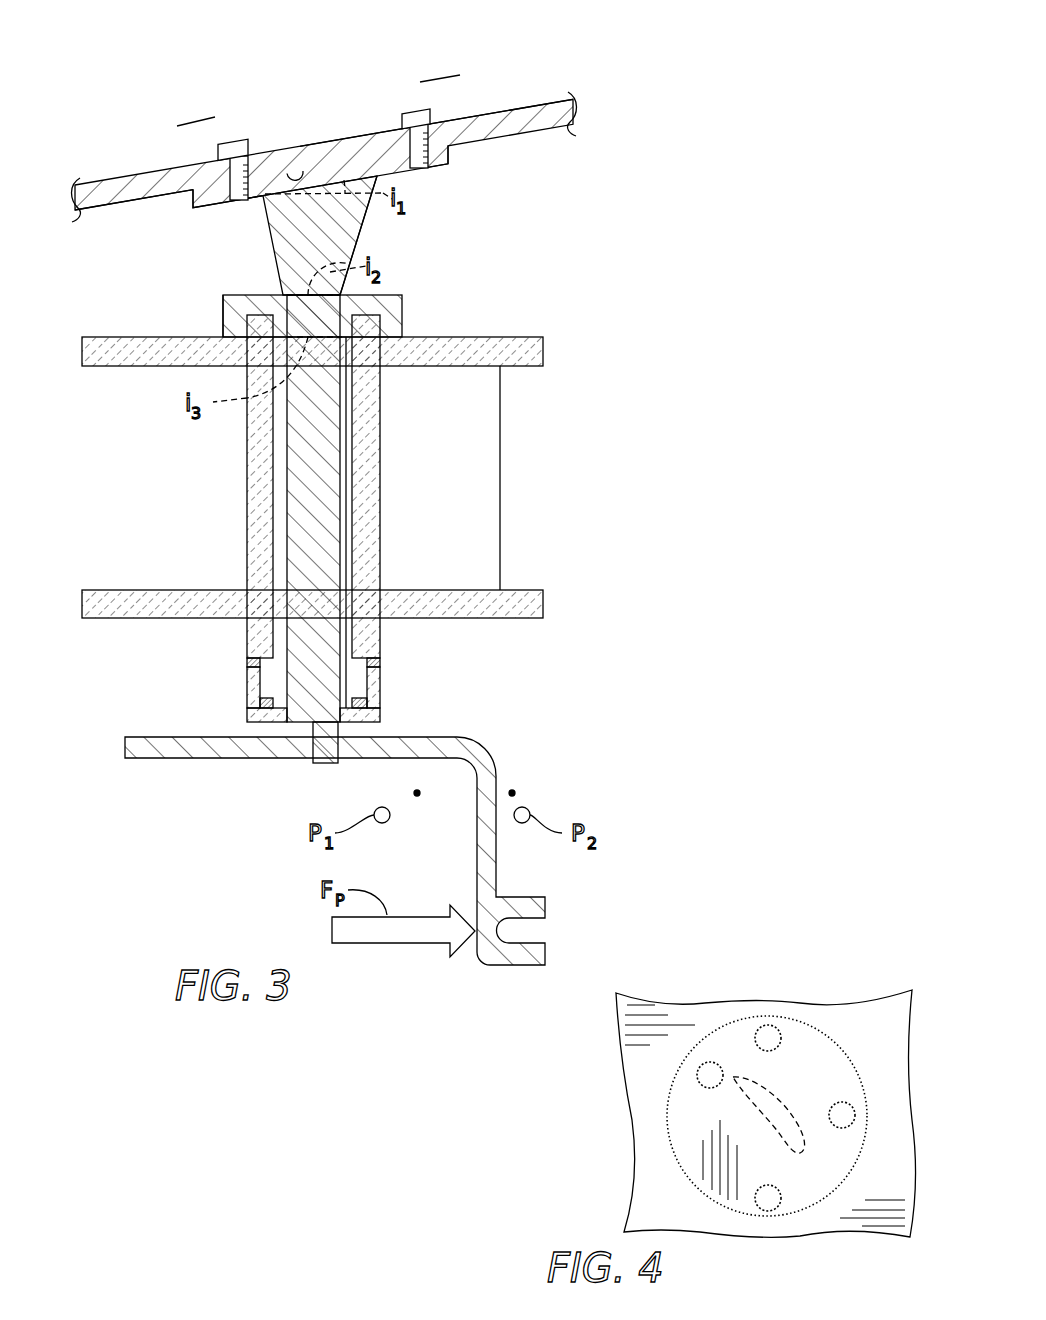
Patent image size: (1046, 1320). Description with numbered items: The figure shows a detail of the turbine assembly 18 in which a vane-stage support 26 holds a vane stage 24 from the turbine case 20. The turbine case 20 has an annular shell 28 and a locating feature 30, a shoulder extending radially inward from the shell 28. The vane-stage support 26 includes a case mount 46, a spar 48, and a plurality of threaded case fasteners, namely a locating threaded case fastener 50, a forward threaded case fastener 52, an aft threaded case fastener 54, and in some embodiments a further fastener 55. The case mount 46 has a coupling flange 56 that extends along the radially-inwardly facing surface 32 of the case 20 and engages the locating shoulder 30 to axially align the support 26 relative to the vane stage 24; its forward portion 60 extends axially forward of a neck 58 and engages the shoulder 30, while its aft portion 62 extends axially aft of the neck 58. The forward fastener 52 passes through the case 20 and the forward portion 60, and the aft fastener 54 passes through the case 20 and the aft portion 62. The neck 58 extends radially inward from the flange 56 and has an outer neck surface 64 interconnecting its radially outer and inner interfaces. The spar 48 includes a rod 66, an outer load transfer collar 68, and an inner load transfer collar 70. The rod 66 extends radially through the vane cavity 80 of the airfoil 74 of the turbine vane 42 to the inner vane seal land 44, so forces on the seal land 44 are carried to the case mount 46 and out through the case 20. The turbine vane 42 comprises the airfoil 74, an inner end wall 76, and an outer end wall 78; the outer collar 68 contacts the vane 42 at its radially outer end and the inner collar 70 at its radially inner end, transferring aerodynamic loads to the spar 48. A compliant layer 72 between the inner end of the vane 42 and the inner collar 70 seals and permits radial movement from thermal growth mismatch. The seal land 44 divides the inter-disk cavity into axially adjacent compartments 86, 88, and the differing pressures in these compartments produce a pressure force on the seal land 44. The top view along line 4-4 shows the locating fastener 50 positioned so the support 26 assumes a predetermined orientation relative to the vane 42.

In FIG. 3, the turbine assembly 18 is at (116, 97).
In FIG. 3, the turbine case 20 is at (308, 82).
In FIG. 4, the turbine case 20 is at (612, 1152).
In FIG. 3, the line 4- 4 is at (195, 157).
In FIG. 3, the forward threaded case fastener 52 is at (230, 142).
In FIG. 4, the forward threaded case fastener 52 is at (768, 1211).
In FIG. 3, the radially-inwardly facing surface 32 is at (293, 178).
In FIG. 3, the annular shell 28 is at (365, 133).
In FIG. 3, the aft threaded case fastener 54 is at (410, 112).
In FIG. 4, the aft threaded case fastener 54 is at (768, 1025).
In FIG. 3, the aft portion 62 is at (440, 164).
In FIG. 3, the vane-stage support 26 is at (574, 228).
In FIG. 3, the case mount 46 is at (457, 203).
In FIG. 3, the locating feature 30 is at (180, 205).
In FIG. 3, the coupling flange 56 is at (220, 224).
In FIG. 3, the forward portion 60 is at (255, 200).
In FIG. 3, the outer neck surface 64 is at (367, 208).
In FIG. 3, the neck 58 is at (368, 244).
In FIG. 3, the outer load transfer collar 68 is at (217, 315).
In FIG. 3, the spar 48 is at (410, 318).
In FIG. 3, the outer end wall 78 is at (543, 350).
In FIG. 3, the airfoil 74 is at (382, 455).
In FIG. 4, the airfoil 74 is at (792, 1098).
In FIG. 3, the turbine vane 42 is at (532, 468).
In FIG. 4, the turbine vane 42 is at (818, 1099).
In FIG. 3, the rod 66 is at (287, 493).
In FIG. 3, the inner end wall 76 is at (543, 600).
In FIG. 3, the compliant layer 72 is at (247, 660).
In FIG. 3, the inner load transfer collar 70 is at (223, 693).
In FIG. 3, the vane cavity 80 is at (343, 598).
In FIG. 3, the compartment 86 is at (417, 793).
In FIG. 3, the compartment 88 is at (512, 793).
In FIG. 3, the vane stage 24 is at (113, 778).
In FIG. 3, the inner vane seal land 44 is at (257, 833).
In FIG. 4, the locating threaded case fastener 50 is at (710, 1062).
In FIG. 4, the threaded case fastener 55 is at (855, 1115).